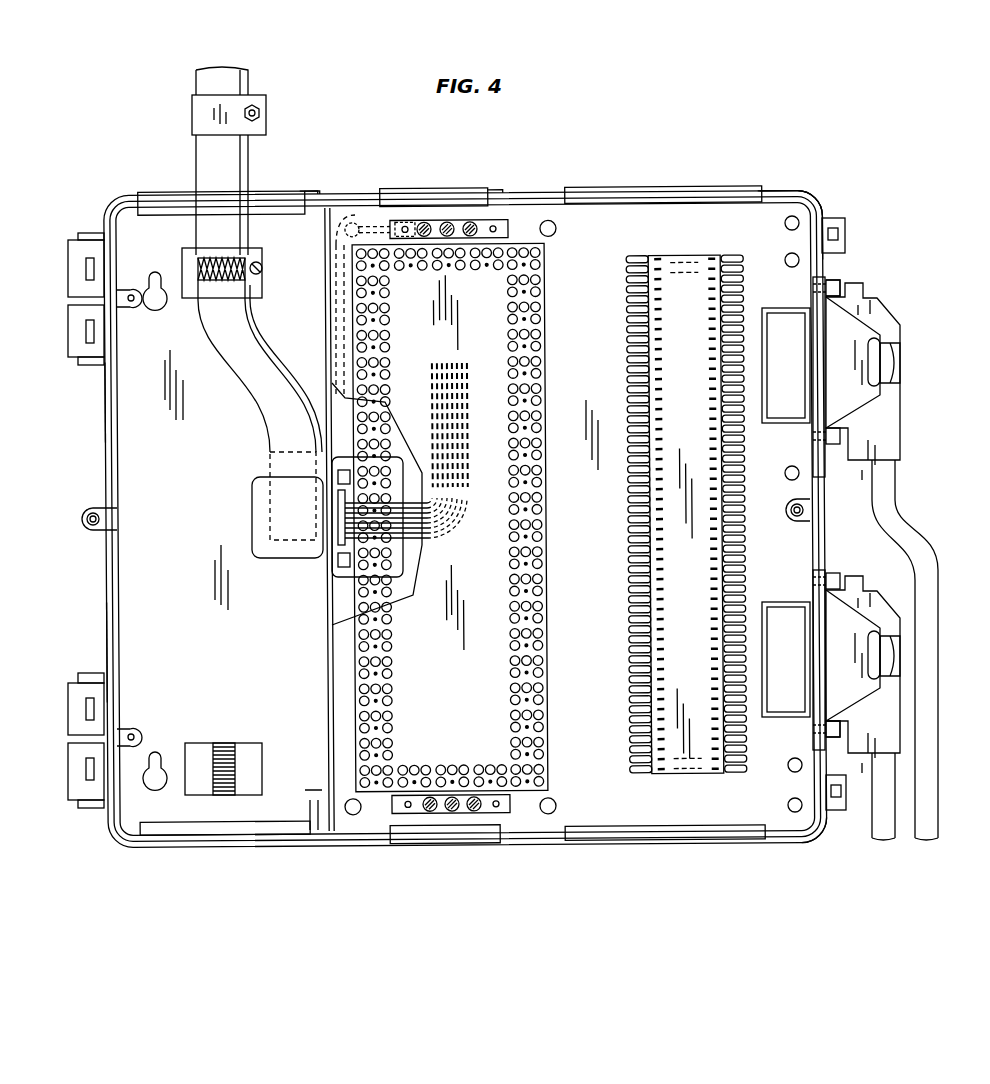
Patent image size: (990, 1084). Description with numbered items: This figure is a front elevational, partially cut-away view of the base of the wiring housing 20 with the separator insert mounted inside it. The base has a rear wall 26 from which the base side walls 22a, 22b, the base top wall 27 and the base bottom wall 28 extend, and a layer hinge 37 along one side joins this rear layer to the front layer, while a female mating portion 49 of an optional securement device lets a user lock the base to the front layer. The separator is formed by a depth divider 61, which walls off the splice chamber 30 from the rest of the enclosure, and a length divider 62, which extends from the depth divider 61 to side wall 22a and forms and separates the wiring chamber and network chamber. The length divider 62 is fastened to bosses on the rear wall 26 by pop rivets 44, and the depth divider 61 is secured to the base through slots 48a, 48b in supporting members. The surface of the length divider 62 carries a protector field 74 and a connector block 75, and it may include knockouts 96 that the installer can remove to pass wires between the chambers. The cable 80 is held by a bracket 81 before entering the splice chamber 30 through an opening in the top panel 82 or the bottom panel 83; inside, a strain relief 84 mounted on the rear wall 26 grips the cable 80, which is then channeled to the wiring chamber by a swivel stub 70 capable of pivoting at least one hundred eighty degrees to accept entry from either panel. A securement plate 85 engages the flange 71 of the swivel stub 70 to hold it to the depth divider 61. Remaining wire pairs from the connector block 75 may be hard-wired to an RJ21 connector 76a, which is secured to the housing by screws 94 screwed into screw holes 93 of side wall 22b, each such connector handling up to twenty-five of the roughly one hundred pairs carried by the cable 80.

The wiring housing 20 is at (434, 172).
The base side wall 22a is at (824, 210).
The base side wall 22b is at (105, 400).
The rear wall 26 is at (200, 488).
The base top wall 27 is at (782, 192).
The base bottom wall 28 is at (810, 848).
The splice chamber 30 is at (127, 652).
The layer hinge 37 is at (88, 232).
The pop rivets 44 is at (545, 818).
The slot 48a is at (333, 212).
The slot 48b is at (322, 800).
The female mating portion 49 is at (85, 525).
The depth divider 61 is at (330, 831).
The length divider 62 is at (614, 213).
The swivel stub 70 is at (265, 510).
The flange 71 is at (362, 488).
The protector field 74 is at (497, 640).
The connector block 75 is at (654, 592).
The RJ21 connector 76a is at (880, 322).
The cable 80 is at (198, 85).
The bracket 81 is at (262, 97).
The top panel 82 is at (180, 188).
The bottom panel 83 is at (174, 844).
The strain relief 84 is at (262, 275).
The securement plate 85 is at (338, 582).
The screw holes 93 is at (812, 735).
The screws 94 is at (842, 284).
The knockouts 96 is at (777, 318).